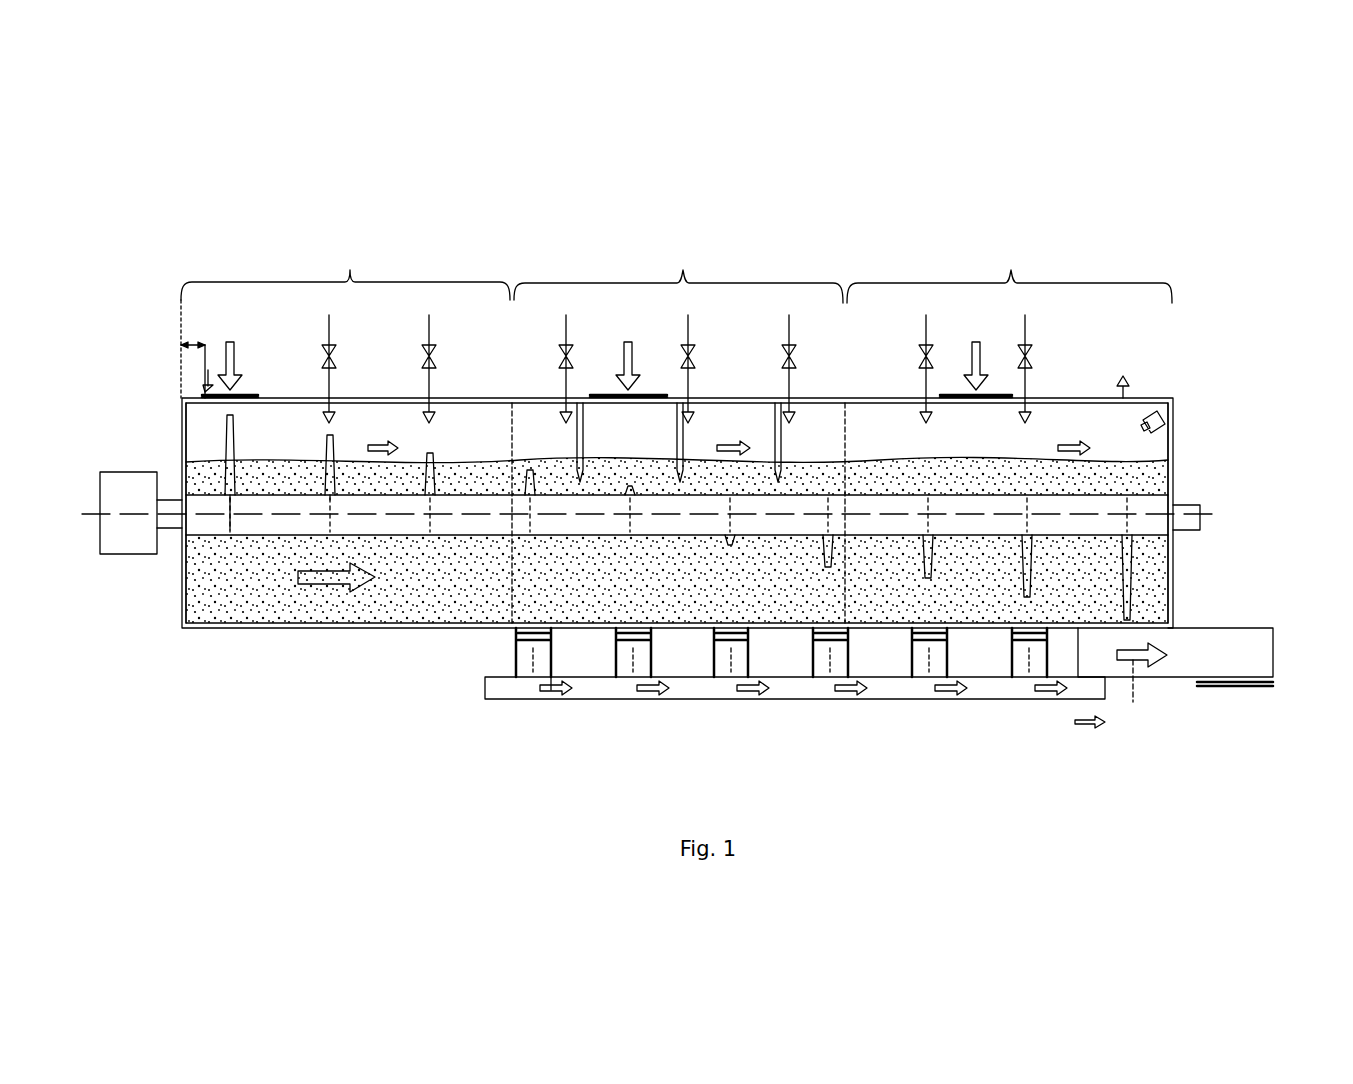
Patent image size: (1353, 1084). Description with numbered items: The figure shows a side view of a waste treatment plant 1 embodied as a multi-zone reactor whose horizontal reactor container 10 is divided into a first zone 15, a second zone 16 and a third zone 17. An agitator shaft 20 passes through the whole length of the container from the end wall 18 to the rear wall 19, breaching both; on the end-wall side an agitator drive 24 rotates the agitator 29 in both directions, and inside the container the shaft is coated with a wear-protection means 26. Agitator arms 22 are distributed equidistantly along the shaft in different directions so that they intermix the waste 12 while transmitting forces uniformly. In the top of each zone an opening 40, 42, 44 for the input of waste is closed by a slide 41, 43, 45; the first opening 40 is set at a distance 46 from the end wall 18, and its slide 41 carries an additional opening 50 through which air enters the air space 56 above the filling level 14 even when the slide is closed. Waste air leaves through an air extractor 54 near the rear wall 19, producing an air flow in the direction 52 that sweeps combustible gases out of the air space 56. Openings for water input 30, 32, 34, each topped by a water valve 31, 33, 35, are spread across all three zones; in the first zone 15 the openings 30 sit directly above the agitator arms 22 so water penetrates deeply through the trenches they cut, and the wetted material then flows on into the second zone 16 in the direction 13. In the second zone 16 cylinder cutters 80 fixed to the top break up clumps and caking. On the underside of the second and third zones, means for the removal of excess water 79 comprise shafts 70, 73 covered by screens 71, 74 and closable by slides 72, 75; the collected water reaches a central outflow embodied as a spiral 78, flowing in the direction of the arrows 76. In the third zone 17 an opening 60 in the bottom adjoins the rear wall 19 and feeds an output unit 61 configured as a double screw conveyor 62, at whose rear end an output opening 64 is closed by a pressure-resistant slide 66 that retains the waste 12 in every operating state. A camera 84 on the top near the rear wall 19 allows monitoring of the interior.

The waste treatment plant 1 is at (1224, 291).
The reactor container 10 is at (1176, 472).
The waste 12 is at (258, 600).
The direction of waste flow 13 is at (323, 582).
The filling level 14 is at (205, 455).
The first zone 15 is at (350, 268).
The second zone 16 is at (683, 268).
The third zone 17 is at (1011, 268).
The end wall 18 is at (180, 420).
The rear wall 19 is at (1175, 415).
The agitator shaft 20 is at (197, 480).
The agitator arms 22 is at (325, 438).
The agitator drive 24 is at (124, 540).
The wear-protection means 26 is at (204, 530).
The agitator 29 is at (115, 458).
The opening for water input 30 is at (422, 386).
The water valve 31 is at (422, 354).
The opening for water input 32 is at (560, 386).
The water valve 33 is at (560, 352).
The opening for water input 34 is at (919, 386).
The water valve 35 is at (919, 352).
The opening for the input of waste 40 is at (262, 405).
The slide 41 is at (258, 388).
The opening for the input of waste 42 is at (615, 405).
The slide 43 is at (652, 395).
The opening for the input of waste 44 is at (988, 405).
The slide 45 is at (997, 395).
The distance 46 is at (188, 340).
The additional opening 50 is at (210, 378).
The direction of air flow 52 is at (376, 442).
The air extractor 54 is at (1121, 380).
The air space 56 is at (895, 446).
The opening in the bottom 60 is at (1173, 638).
The output unit 61 is at (1270, 698).
The double screw conveyor 62 is at (1270, 652).
The output opening 64 is at (1238, 650).
The pressure-resistant slide 66 is at (1240, 690).
The shaft 70 is at (523, 665).
The screen 71 is at (514, 633).
The slide 72 is at (551, 636).
The shaft 73 is at (916, 666).
The screen 74 is at (910, 633).
The slide 75 is at (947, 636).
The arrows indicating direction of water flow 76 is at (552, 690).
The spiral 78 is at (600, 700).
The means for the removal of excess water 79 is at (498, 716).
The cylinder cutters 80 is at (576, 434).
The camera 84 is at (1148, 405).